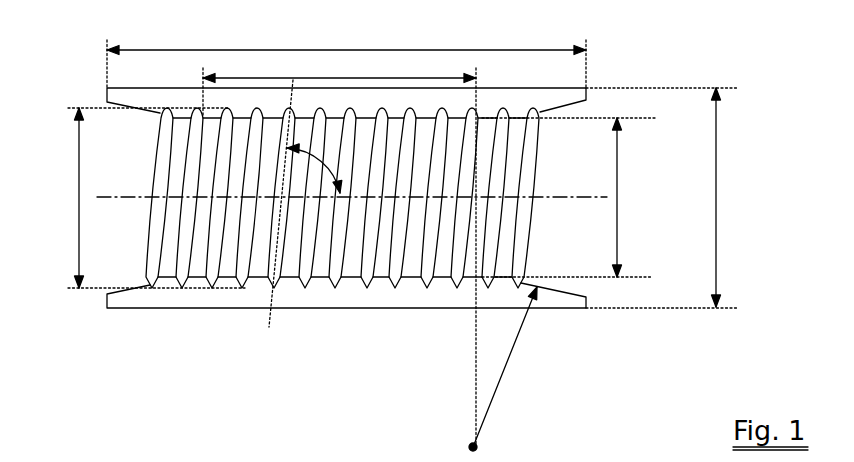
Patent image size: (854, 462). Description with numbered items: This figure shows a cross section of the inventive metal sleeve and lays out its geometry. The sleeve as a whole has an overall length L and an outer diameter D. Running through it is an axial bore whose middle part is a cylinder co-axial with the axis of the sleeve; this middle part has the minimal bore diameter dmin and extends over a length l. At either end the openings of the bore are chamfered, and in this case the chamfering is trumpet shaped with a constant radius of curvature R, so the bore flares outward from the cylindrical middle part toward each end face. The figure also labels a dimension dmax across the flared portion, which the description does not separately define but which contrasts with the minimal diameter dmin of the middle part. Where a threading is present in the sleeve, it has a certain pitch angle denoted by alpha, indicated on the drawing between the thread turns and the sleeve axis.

The overall length L is at (346, 54).
The length of the axial middle part l is at (339, 250).
The maximum outer diameter of coil dmax is at (129, 198).
The minimal diameter dmin is at (580, 197).
The outer diameter D is at (665, 198).
The radius of curvature R is at (504, 369).
The pitch angle alpha is at (306, 203).